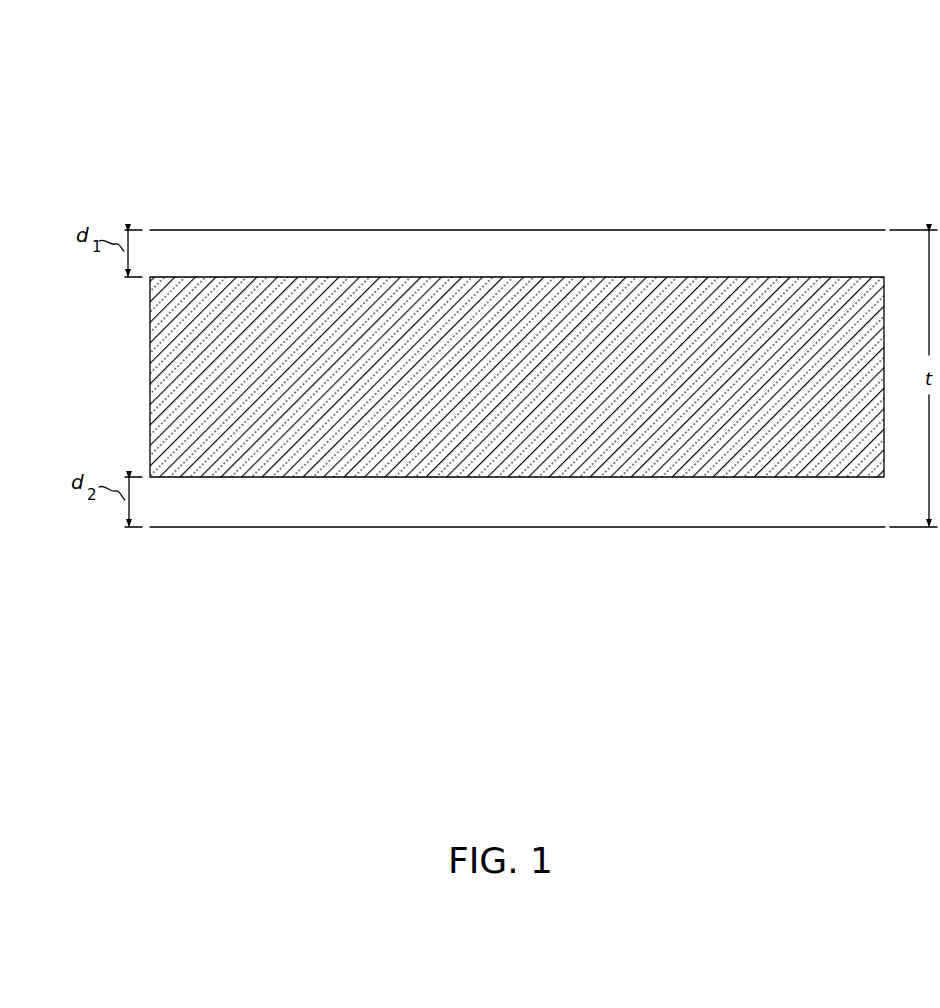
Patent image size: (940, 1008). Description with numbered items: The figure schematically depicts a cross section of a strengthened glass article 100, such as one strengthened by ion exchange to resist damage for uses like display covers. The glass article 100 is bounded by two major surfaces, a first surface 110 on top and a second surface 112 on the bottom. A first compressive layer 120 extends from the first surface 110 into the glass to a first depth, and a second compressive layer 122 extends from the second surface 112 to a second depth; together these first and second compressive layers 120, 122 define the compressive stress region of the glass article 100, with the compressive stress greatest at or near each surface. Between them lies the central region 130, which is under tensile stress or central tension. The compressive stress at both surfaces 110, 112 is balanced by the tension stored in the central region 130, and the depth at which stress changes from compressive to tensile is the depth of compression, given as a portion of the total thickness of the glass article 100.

The glass article 100 is at (845, 126).
The first surface 110 is at (731, 231).
The second surface 112 is at (732, 528).
The first compressive layer 120 is at (242, 241).
The second compressive layer 122 is at (243, 516).
The central region 130 is at (160, 372).